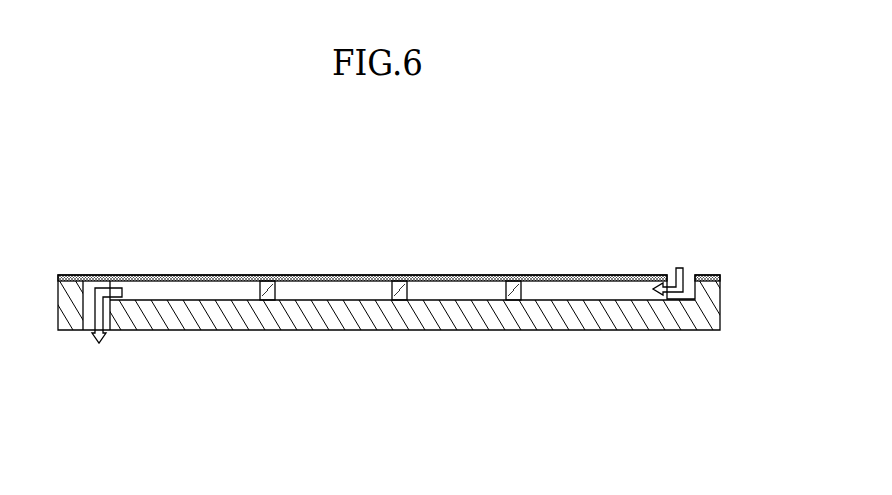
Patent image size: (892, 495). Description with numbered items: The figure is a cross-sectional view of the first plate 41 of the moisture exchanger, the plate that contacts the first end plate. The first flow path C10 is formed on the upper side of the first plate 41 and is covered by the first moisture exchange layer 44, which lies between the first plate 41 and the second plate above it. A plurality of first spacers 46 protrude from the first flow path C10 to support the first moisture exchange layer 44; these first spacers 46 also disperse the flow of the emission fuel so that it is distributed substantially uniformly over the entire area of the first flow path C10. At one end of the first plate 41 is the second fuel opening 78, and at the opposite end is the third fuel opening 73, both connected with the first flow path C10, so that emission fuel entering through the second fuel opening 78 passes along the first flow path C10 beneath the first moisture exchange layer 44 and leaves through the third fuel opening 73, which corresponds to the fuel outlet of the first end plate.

The first plate 41 is at (333, 312).
The first moisture exchange layer 44 is at (456, 278).
The first spacers 46 is at (267, 280).
The third fuel opening 73 is at (89, 286).
The second fuel opening 78 is at (689, 288).
The first flow path C10 is at (343, 290).